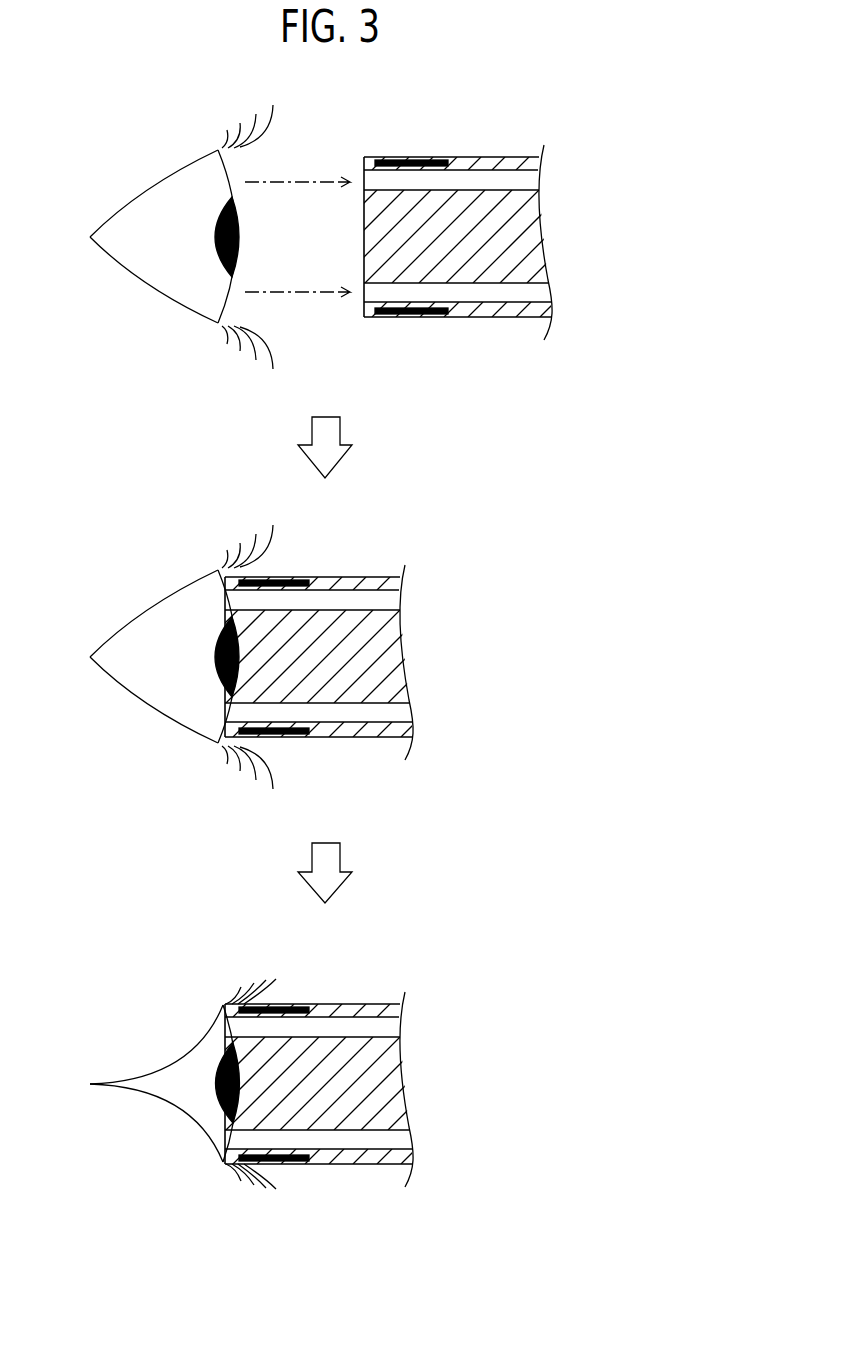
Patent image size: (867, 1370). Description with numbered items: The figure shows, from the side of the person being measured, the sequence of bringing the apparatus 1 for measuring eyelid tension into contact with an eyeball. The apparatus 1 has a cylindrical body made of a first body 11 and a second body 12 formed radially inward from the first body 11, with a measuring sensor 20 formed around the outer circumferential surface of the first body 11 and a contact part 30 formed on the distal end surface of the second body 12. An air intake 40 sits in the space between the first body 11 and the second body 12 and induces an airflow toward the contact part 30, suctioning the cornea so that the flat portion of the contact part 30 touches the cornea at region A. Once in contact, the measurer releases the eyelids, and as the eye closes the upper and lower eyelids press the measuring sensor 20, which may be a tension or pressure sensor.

The apparatus for measuring eyelid tension 1 is at (483, 364).
The first body 11 is at (350, 152).
The second body 12 is at (348, 237).
The measuring sensor 20 is at (422, 157).
The contact part 30 is at (364, 253).
The air intake 40 is at (487, 181).
The contact region A is at (314, 661).